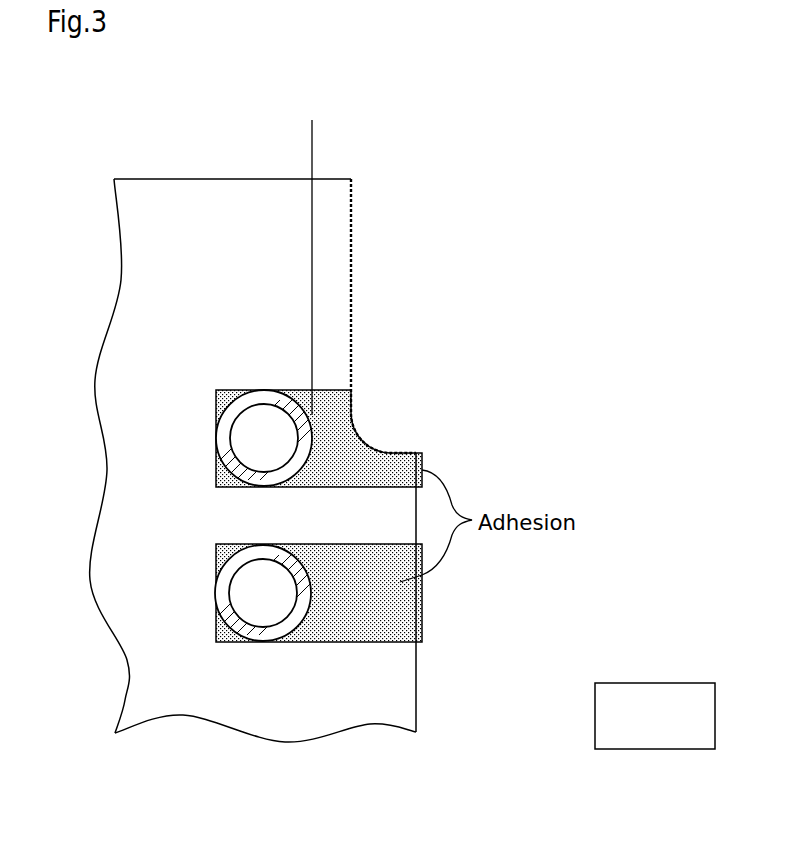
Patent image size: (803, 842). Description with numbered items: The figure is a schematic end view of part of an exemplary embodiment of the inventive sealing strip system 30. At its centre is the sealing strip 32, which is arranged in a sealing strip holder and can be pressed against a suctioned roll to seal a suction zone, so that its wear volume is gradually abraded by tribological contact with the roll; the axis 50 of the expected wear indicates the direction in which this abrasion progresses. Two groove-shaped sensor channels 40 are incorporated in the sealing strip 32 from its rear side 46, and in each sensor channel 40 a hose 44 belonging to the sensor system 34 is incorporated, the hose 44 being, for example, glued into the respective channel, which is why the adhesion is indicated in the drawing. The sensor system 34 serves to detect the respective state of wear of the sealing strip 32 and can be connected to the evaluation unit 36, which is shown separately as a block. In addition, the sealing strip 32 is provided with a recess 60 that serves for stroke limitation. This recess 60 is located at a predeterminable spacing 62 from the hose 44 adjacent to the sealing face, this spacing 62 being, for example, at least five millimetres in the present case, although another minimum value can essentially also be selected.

The sealing strip system 30 is at (243, 103).
The sealing strip 32 is at (142, 287).
The sensor system 34 is at (232, 465).
The evaluation unit 36 is at (640, 695).
The sensor channel 40 is at (265, 397).
The hose 44 is at (224, 578).
The rear side 46 is at (416, 677).
The axis of the expected wear 50 is at (79, 179).
The recess 60 is at (364, 162).
The spacing 62 is at (388, 150).